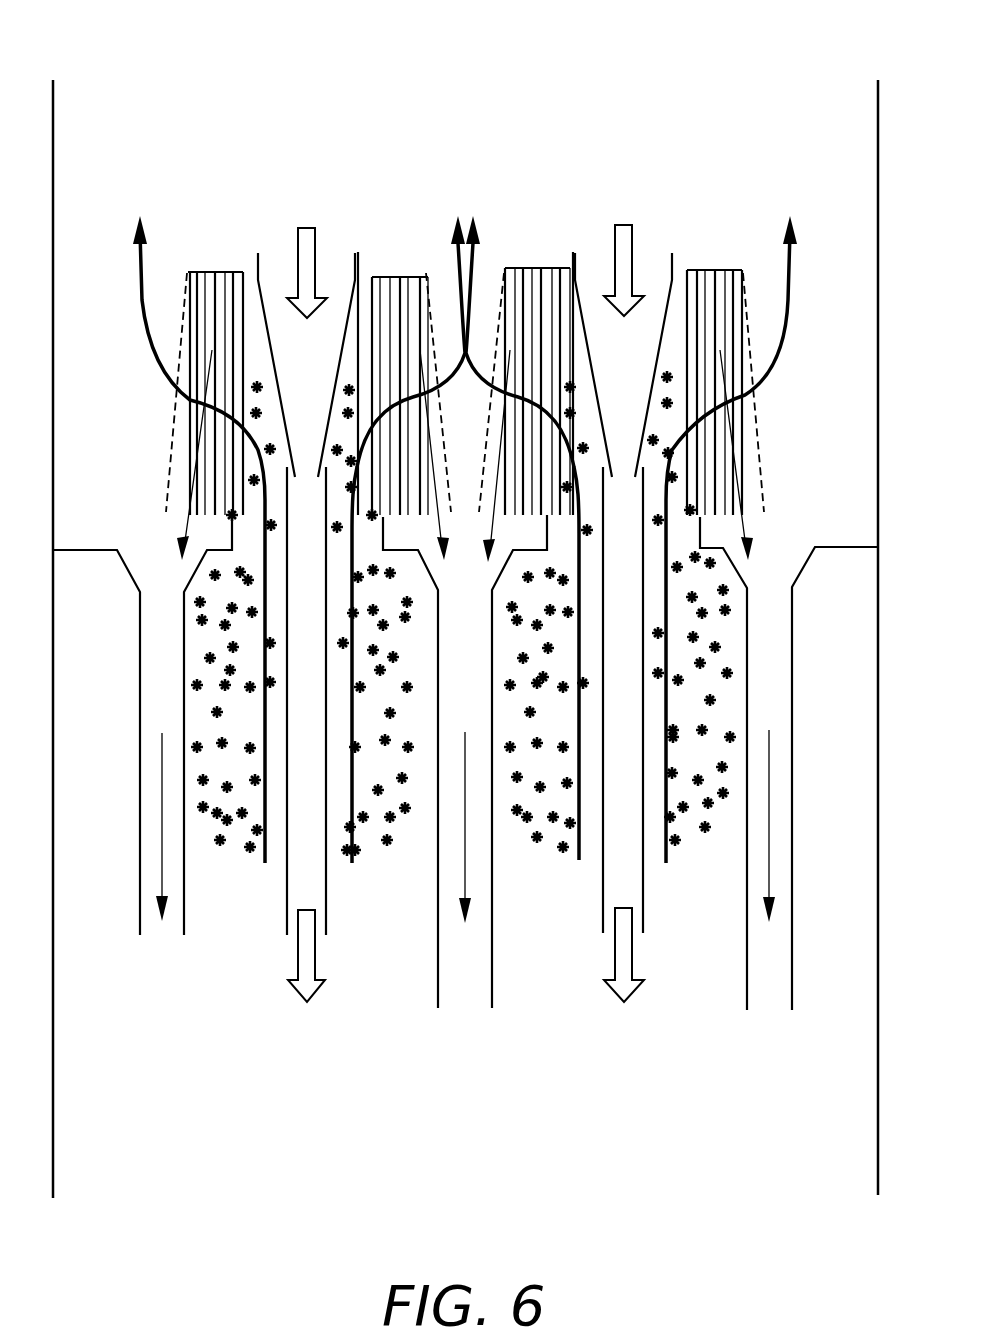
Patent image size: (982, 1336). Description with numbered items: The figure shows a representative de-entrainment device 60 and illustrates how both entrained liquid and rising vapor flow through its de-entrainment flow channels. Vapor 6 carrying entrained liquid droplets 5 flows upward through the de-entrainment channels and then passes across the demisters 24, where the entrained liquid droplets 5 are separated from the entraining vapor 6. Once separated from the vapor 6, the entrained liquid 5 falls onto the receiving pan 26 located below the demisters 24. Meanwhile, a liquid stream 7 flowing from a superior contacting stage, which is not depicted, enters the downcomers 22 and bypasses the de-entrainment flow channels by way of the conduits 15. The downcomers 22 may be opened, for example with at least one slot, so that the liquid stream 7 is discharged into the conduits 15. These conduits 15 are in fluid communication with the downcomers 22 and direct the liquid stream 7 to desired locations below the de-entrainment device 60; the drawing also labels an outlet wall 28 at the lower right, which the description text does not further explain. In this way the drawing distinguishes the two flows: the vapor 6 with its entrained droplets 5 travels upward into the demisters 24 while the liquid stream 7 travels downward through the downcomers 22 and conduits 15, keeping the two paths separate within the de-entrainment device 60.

The de-entrainment device 60 is at (437, 78).
The vapor 6 is at (136, 230).
The demisters 24 is at (392, 272).
The downcomers 22 is at (578, 290).
The liquid stream 7 is at (623, 225).
The receiving pan 26 is at (838, 547).
The entrained liquid droplets 5 is at (163, 925).
The conduits 15 is at (437, 997).
The outlet channel wall 28 is at (793, 997).